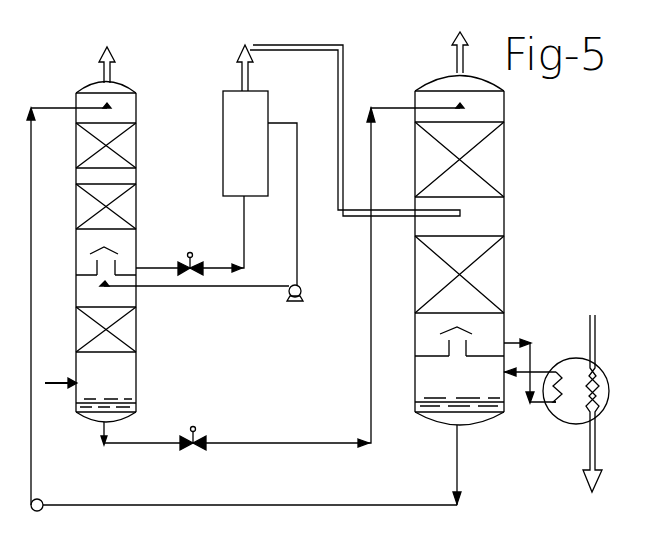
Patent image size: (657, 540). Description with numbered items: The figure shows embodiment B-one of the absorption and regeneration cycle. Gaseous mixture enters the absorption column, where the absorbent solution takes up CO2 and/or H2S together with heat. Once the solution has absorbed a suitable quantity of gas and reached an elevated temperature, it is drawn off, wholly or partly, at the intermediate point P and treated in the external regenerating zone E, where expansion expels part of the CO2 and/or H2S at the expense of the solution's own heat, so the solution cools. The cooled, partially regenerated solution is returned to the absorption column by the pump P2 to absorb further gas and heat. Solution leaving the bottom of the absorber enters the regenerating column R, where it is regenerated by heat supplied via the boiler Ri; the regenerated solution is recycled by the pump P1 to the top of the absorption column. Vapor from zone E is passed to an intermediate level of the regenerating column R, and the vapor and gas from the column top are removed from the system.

The regenerating zone E is at (330, 165).
The point at intermediate level of absorption column P is at (113, 261).
The pump P1 is at (244, 499).
The pump P2 is at (306, 294).
The regenerating column R is at (470, 268).
The boiler Ri is at (556, 403).